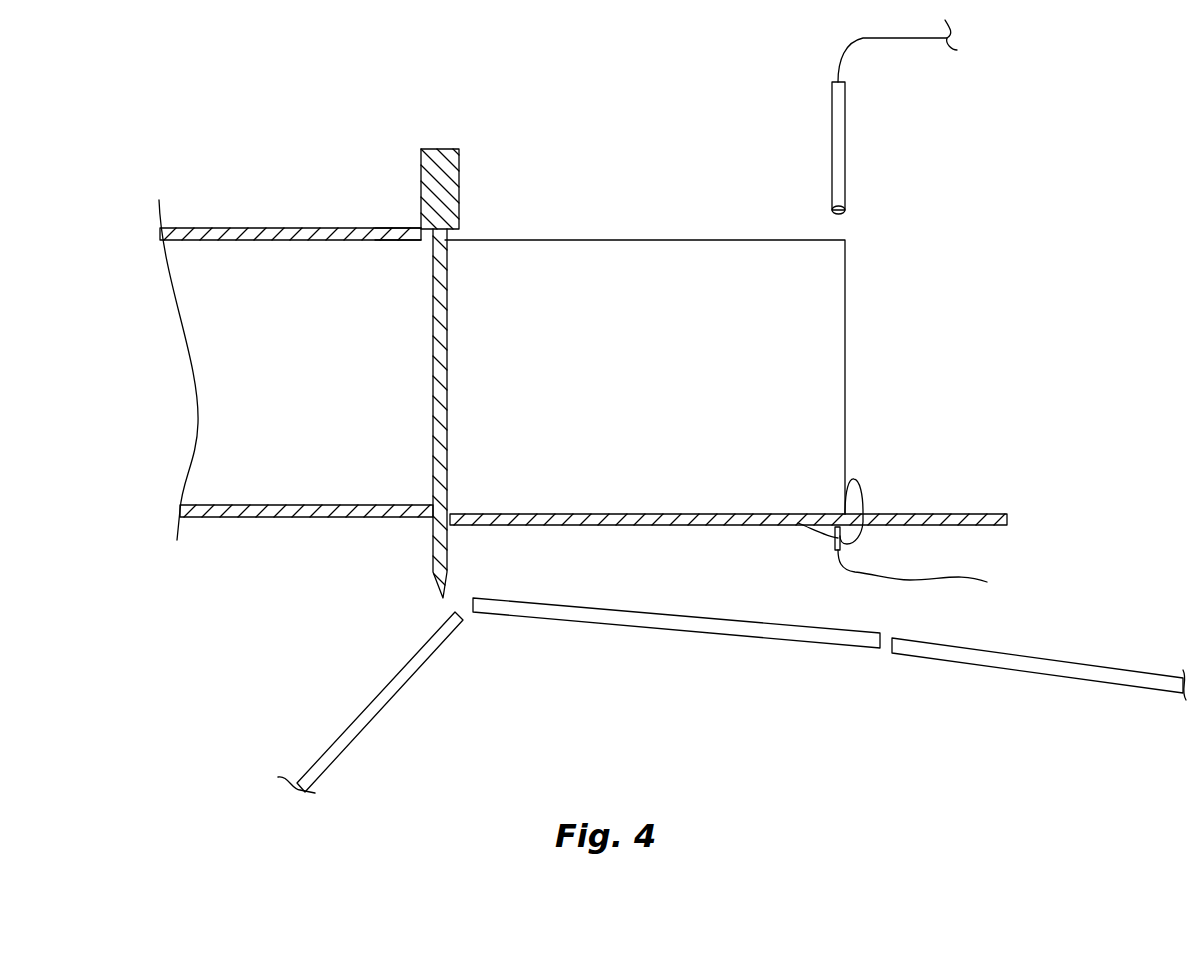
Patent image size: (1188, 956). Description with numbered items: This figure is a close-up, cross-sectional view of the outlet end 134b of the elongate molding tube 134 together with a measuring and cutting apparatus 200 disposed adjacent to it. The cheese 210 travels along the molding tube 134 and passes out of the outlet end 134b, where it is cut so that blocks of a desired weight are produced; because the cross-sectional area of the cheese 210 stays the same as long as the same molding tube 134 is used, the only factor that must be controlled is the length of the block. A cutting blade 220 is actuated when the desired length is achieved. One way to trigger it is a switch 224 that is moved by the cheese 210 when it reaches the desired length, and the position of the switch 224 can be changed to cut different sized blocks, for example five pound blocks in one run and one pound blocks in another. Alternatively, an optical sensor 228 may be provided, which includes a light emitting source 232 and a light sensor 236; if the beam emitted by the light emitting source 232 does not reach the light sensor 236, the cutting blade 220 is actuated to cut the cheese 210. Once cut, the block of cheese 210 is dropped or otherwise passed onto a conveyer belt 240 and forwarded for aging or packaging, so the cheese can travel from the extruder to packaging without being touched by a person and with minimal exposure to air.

The molding tube 134 is at (247, 228).
The outlet end 134b is at (413, 228).
The measuring and cutting apparatus 200 is at (618, 143).
The cheese 210 is at (320, 384).
The cutting blade 220 is at (448, 207).
The switch 224 is at (858, 493).
The optical sensor 228 is at (970, 151).
The light emitting source 232 is at (842, 192).
The light sensor 236 is at (828, 542).
The conveyer belt 240 is at (780, 632).